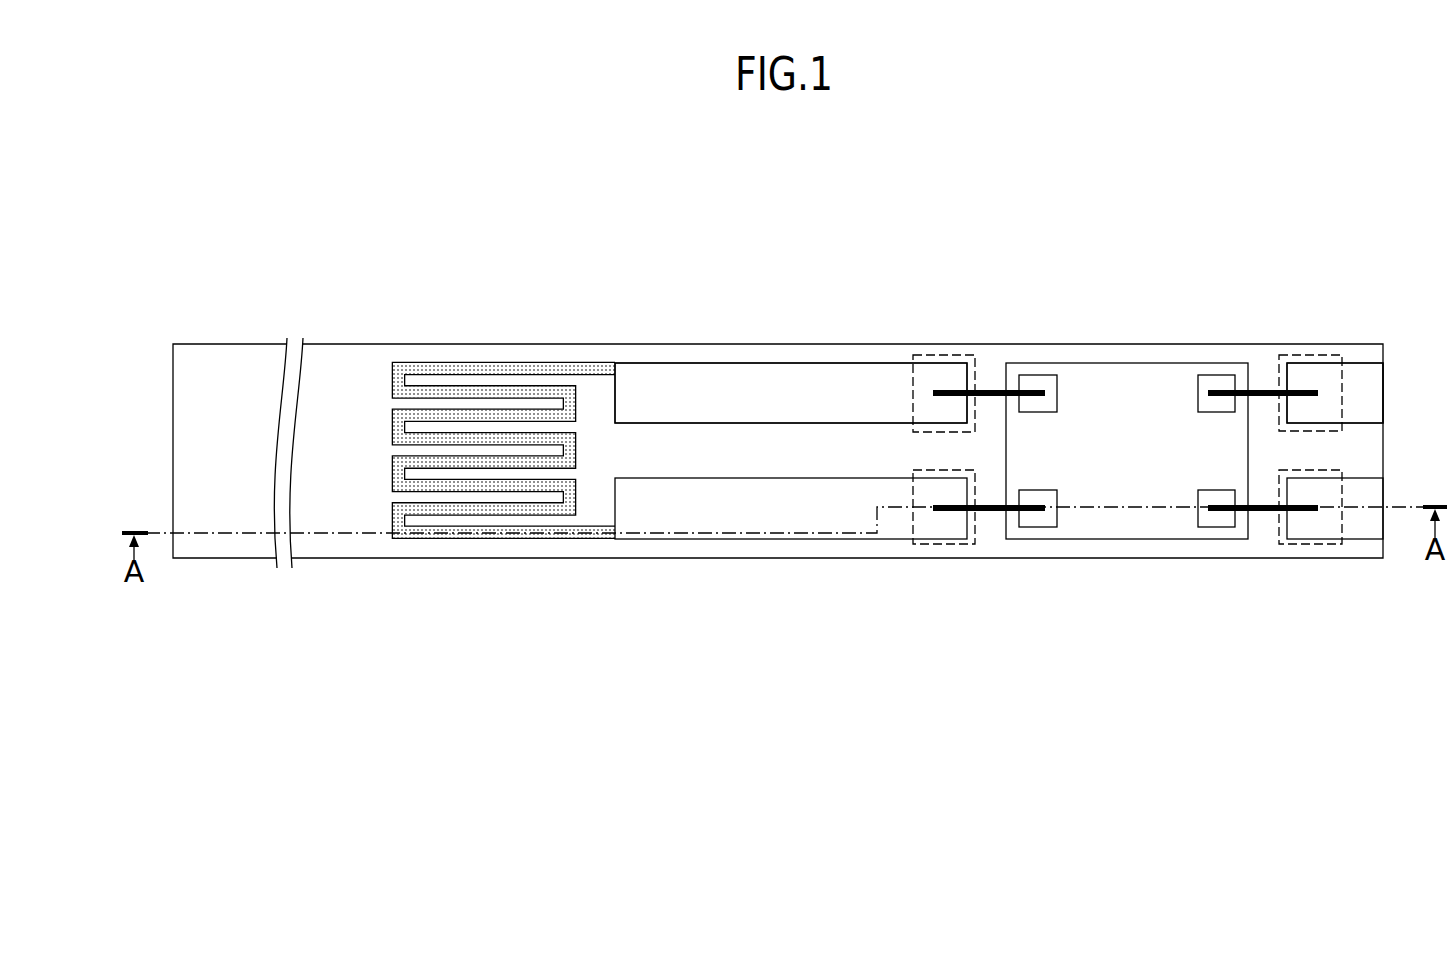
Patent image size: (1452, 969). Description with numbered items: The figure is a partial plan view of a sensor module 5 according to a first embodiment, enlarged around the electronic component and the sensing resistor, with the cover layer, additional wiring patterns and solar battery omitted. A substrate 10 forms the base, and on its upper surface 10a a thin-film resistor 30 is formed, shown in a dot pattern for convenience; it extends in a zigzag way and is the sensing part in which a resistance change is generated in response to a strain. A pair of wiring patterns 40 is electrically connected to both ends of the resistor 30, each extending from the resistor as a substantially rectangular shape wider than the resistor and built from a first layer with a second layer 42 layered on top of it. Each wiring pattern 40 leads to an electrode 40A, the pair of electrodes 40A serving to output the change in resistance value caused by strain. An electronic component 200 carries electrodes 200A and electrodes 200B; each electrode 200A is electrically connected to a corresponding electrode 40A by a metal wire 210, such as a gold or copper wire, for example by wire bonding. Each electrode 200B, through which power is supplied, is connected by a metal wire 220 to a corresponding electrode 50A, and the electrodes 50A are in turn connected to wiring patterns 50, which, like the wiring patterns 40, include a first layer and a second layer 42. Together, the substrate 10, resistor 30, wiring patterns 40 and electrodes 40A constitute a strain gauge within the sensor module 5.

The sensor module 5 is at (169, 244).
The substrate 10 is at (194, 338).
The upper surface of the substrate 10a is at (237, 365).
The resistor 30 is at (510, 368).
The wiring patterns 40 is at (787, 352).
The second layer 42 is at (715, 387).
The electrodes 40A is at (935, 352).
The electronic component 200 is at (1132, 400).
The electrodes of the electronic component 200A is at (1035, 380).
The electrodes of the electronic component 200B is at (1220, 378).
The metal wire 210 is at (978, 372).
The metal wire 220 is at (1272, 390).
The wiring patterns 50 is at (1369, 351).
The electrodes 50A is at (1318, 352).